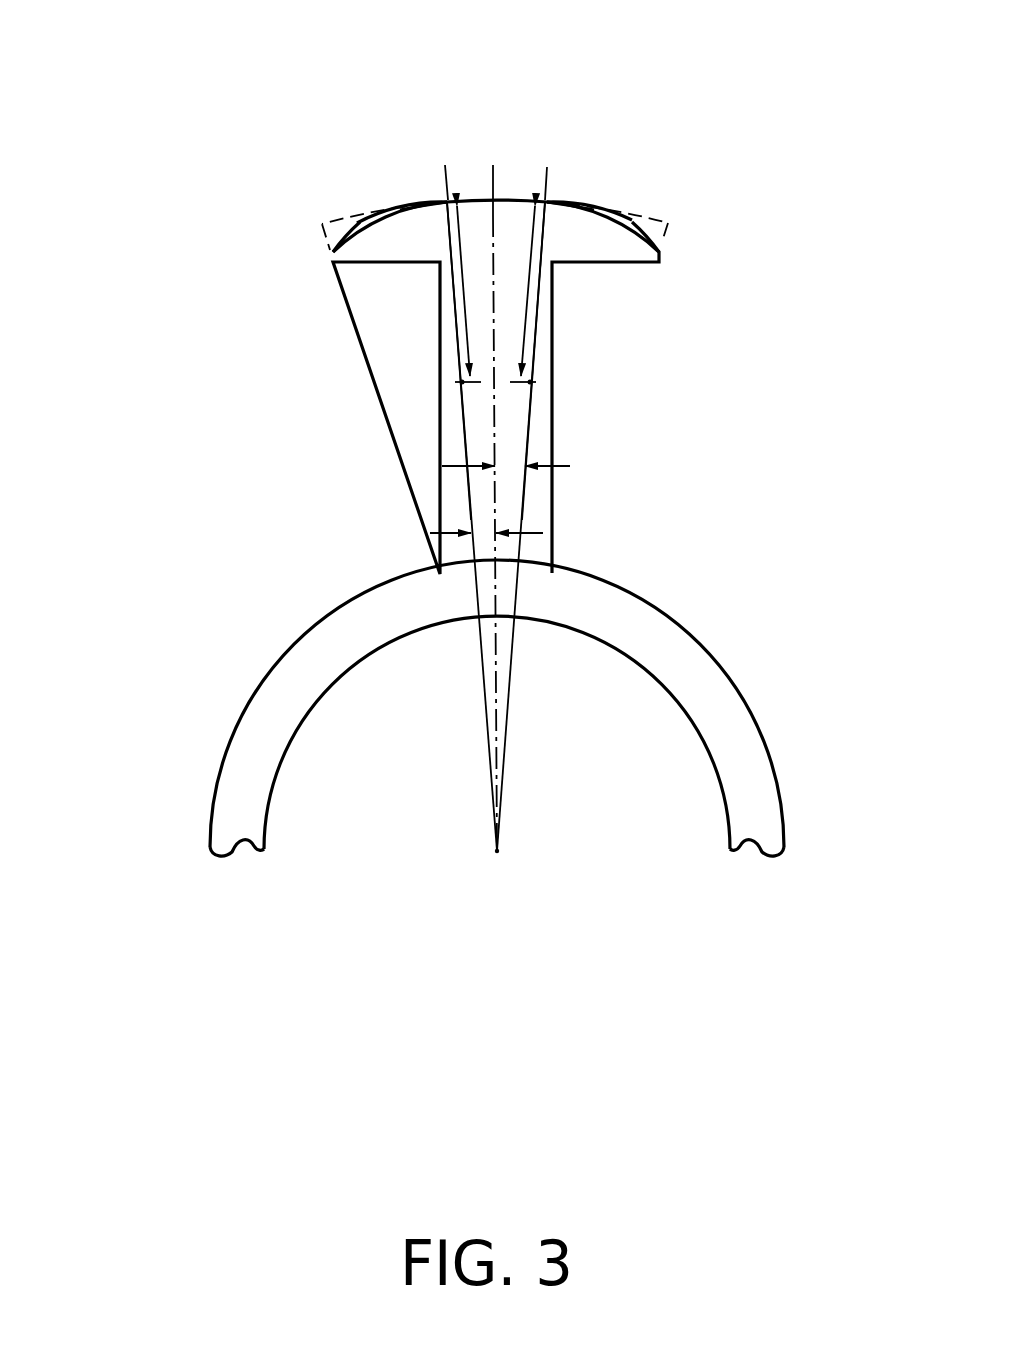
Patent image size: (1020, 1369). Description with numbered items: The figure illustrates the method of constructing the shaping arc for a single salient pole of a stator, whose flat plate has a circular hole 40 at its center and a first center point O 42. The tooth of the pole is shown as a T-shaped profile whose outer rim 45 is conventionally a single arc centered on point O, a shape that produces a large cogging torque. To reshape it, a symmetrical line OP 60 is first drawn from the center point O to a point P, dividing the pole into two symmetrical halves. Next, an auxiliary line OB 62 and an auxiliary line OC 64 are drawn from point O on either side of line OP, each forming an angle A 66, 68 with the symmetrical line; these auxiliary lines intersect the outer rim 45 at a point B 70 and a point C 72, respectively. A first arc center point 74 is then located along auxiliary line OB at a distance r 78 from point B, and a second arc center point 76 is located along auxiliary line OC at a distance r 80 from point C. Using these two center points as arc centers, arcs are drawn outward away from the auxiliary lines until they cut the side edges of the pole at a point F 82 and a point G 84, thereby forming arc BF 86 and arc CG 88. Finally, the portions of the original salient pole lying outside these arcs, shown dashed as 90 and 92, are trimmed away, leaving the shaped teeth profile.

The circular hole 40 is at (697, 727).
The first center point O 42 is at (497, 850).
The outer rim 45 is at (472, 200).
The line OP 60 is at (497, 502).
The auxiliary line OB 62 is at (468, 484).
The auxiliary line OC 64 is at (530, 410).
The angle A 66 is at (506, 466).
The angle A 68 is at (485, 533).
The point B 70 is at (447, 202).
The point C 72 is at (547, 202).
The center point O1 74 is at (462, 382).
The center point O2 76 is at (531, 381).
The distance r 78 is at (455, 300).
The distance r 80 is at (540, 290).
The point F 82 is at (333, 255).
The point G 84 is at (658, 250).
The arc BF 86 is at (357, 223).
The arc CG 88 is at (625, 215).
The trimmed portion of original salient pole 90 is at (310, 220).
The trimmed portion of original salient pole 92 is at (660, 235).